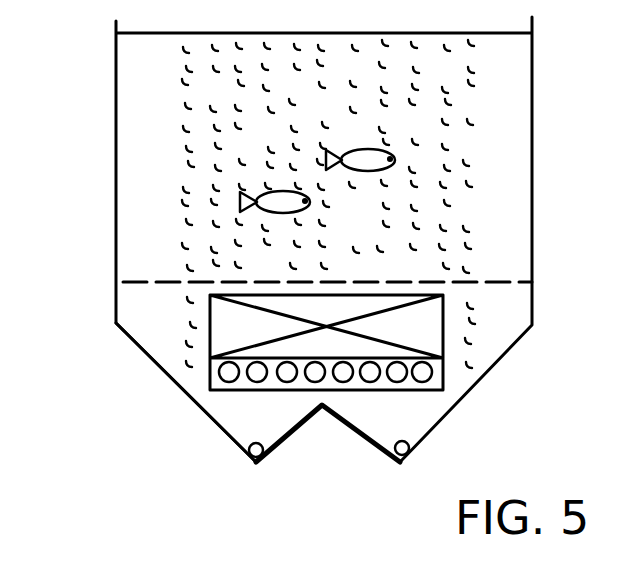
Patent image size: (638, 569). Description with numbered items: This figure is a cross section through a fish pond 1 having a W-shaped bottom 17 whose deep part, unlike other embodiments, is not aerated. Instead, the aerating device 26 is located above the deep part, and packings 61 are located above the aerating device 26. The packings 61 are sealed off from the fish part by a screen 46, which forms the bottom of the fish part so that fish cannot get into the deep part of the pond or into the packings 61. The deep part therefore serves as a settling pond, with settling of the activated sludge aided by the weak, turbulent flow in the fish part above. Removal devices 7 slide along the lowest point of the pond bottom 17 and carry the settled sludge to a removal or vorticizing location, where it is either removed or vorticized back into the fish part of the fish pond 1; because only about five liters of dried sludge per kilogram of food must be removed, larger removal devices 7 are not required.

The fish pond 1 is at (500, 97).
The screen 46 is at (165, 282).
The W-shaped bottom 17 is at (155, 363).
The packings 61 is at (423, 337).
The aerating device 26 is at (430, 372).
The removal devices 7 is at (263, 455).